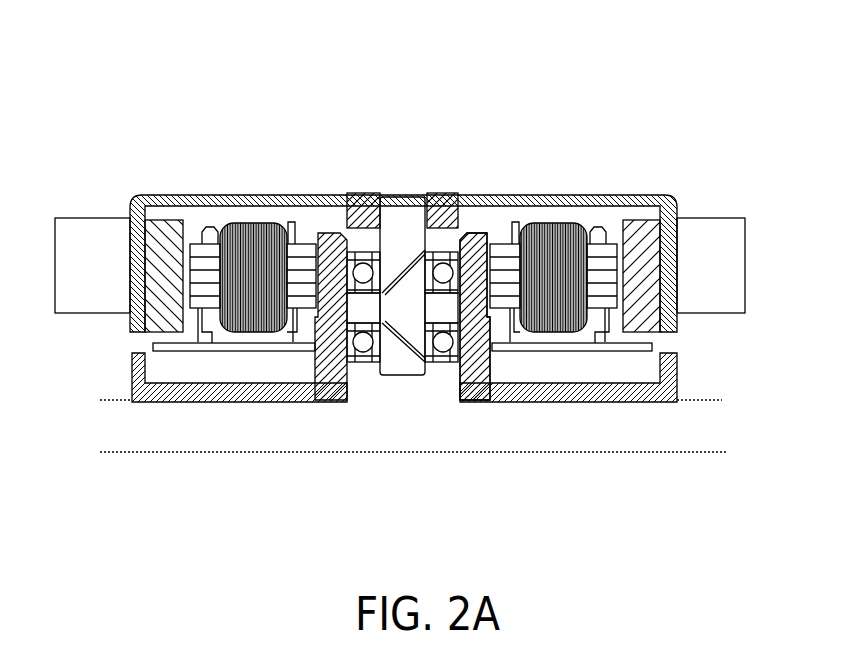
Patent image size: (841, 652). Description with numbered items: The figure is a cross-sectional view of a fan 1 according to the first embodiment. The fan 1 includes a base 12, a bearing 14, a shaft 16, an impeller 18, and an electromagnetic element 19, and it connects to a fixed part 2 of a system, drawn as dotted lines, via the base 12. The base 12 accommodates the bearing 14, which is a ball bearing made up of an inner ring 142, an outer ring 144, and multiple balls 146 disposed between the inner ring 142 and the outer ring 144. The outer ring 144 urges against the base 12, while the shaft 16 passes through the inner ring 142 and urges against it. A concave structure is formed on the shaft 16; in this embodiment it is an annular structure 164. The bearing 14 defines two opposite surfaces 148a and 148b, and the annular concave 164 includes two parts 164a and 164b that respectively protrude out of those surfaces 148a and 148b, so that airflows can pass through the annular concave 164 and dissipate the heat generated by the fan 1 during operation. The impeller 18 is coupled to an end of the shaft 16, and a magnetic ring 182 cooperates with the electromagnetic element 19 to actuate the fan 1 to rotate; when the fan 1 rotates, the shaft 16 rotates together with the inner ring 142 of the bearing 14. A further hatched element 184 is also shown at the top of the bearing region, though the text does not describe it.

The fan 1 is at (735, 25).
The fixed part 2 is at (662, 440).
The base 12 is at (520, 397).
The bearing 14 is at (459, 274).
The inner ring 142 is at (443, 262).
The outer ring 144 is at (465, 237).
The balls 146 is at (453, 257).
The surface 148a is at (368, 365).
The surface 148b is at (315, 242).
The shaft 16 is at (410, 295).
The annular structure 164 is at (410, 316).
The part 164a is at (418, 360).
The part 164b is at (390, 375).
The impeller 18 is at (403, 303).
The magnetic ring 182 is at (650, 228).
The bushing 184 is at (357, 193).
The electromagnetic element 19 is at (242, 222).